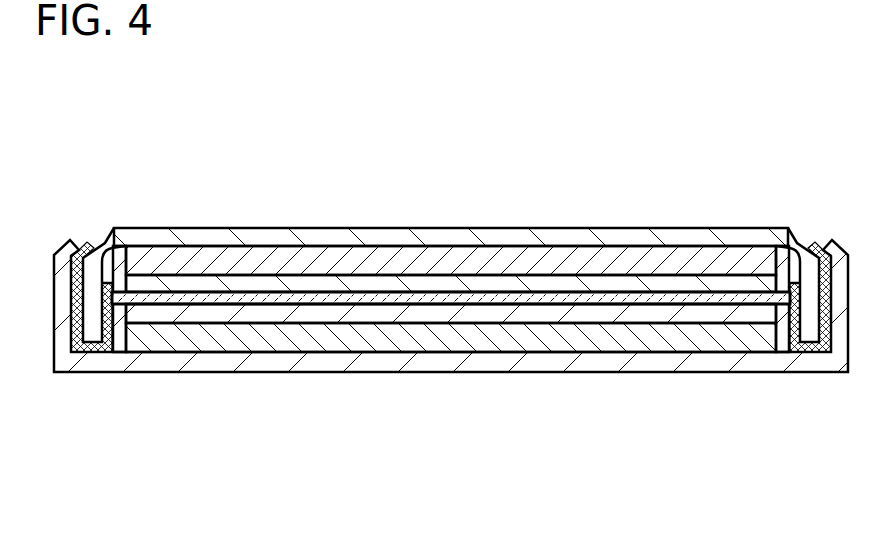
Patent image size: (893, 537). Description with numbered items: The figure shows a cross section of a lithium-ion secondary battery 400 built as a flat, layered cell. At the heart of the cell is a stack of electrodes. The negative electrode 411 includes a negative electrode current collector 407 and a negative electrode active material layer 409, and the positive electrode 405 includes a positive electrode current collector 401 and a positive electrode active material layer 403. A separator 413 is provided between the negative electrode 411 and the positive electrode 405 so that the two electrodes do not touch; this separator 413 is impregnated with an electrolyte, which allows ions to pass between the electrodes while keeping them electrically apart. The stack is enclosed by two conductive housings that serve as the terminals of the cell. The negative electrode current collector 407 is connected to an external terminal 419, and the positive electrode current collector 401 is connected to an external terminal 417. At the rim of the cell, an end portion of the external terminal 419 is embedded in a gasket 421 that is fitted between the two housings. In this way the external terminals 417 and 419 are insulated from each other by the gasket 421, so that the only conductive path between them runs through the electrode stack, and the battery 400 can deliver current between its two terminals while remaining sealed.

The lithium-ion secondary battery 400 is at (165, 160).
The positive electrode current collector 401 is at (204, 338).
The positive electrode active material layer 403 is at (268, 316).
The positive electrode 405 is at (451, 406).
The negative electrode current collector 407 is at (427, 266).
The negative electrode active material layer 409 is at (455, 150).
The negative electrode 411 is at (451, 196).
The separator 413 is at (512, 298).
The external terminal 417 is at (594, 362).
The external terminal 419 is at (683, 240).
The gasket 421 is at (813, 246).